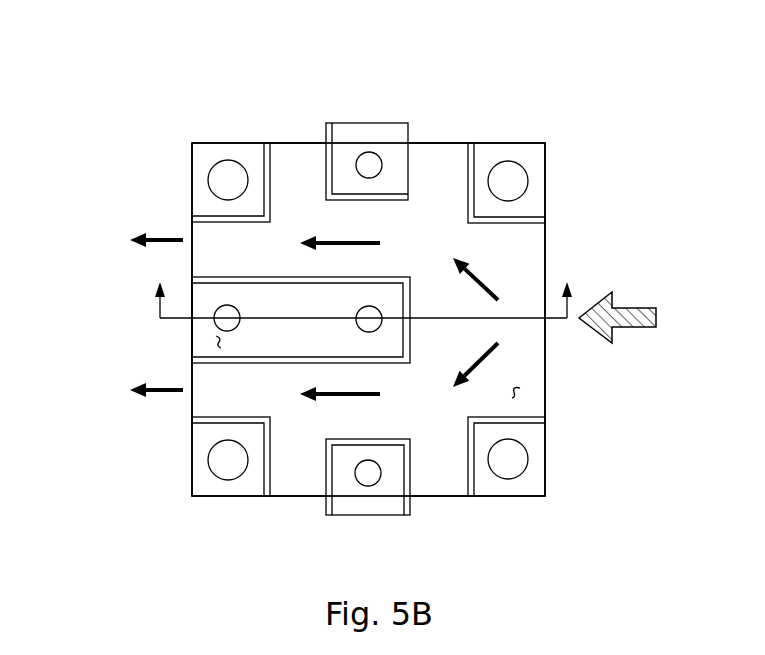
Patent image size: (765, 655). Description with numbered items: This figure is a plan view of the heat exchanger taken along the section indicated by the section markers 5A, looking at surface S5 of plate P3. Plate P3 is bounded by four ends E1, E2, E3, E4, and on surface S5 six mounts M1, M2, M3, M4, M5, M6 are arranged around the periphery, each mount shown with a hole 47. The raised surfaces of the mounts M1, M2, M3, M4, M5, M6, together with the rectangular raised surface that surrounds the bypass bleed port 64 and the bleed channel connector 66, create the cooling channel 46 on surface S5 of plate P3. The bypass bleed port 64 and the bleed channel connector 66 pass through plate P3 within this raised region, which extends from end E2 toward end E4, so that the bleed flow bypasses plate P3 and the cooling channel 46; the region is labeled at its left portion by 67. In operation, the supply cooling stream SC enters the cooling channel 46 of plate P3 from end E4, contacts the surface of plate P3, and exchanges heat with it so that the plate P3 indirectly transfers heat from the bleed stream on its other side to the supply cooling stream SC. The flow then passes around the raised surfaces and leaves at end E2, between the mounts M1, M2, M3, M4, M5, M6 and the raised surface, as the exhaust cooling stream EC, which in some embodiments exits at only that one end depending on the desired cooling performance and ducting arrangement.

The plate P3 is at (134, 80).
The cooling channel 46 is at (526, 245).
The mounting holes 47 is at (230, 178).
The mount M1 is at (533, 485).
The mount M2 is at (360, 498).
The mount M3 is at (220, 487).
The mount M4 is at (215, 150).
The mount M5 is at (367, 130).
The mount M6 is at (515, 150).
The end E1 is at (445, 497).
The end E2 is at (192, 172).
The end E3 is at (300, 143).
The end E4 is at (545, 230).
The bypass bleed port 64 is at (362, 325).
The bleed channel connector 66 is at (237, 313).
The bracket end 67 is at (216, 340).
The section line 5A is at (364, 289).
The exhaust cooling stream EC is at (156, 313).
The supply cooling stream SC is at (617, 310).
The surface S5 is at (520, 388).